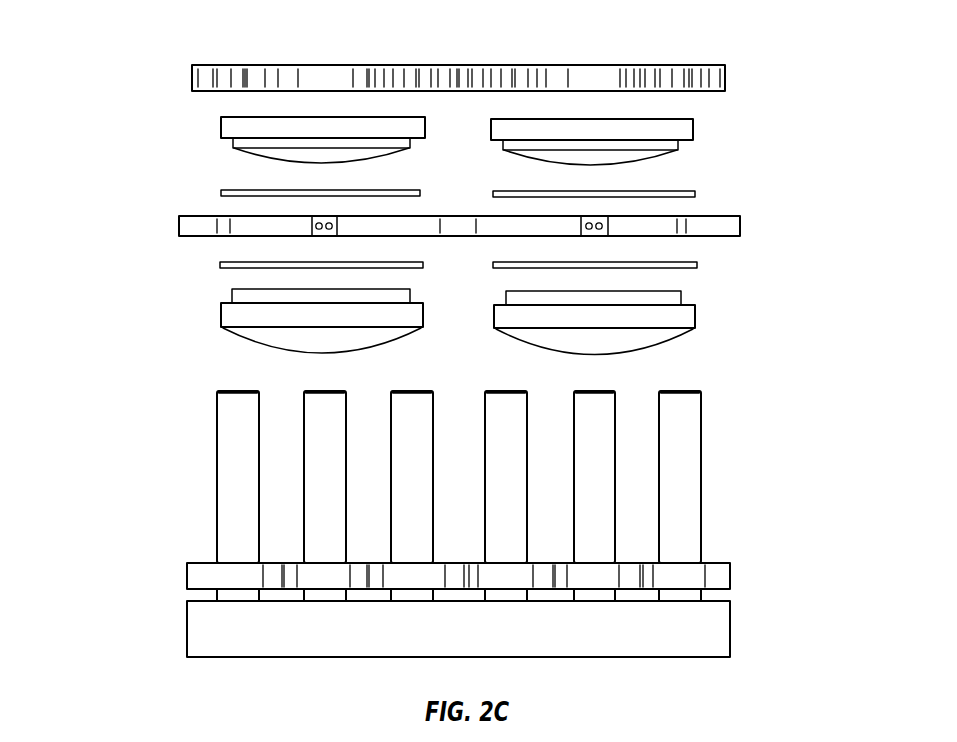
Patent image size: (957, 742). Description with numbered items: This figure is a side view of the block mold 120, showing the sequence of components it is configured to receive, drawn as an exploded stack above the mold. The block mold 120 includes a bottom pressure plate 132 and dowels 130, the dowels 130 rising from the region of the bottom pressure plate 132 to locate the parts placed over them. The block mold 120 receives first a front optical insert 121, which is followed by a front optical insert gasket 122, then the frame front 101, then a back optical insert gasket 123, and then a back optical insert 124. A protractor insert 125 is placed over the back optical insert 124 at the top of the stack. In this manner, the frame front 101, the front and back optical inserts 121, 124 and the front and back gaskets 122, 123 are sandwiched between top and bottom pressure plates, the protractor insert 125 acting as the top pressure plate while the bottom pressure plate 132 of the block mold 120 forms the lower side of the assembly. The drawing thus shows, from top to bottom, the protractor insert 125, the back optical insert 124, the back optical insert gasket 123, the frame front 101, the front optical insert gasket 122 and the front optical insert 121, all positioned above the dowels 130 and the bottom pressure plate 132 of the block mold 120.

The frame front 101 is at (179, 222).
The block mold 120 is at (187, 618).
The front optical insert 121 is at (221, 319).
The front optical insert gasket 122 is at (220, 264).
The back optical insert gasket 123 is at (221, 193).
The back optical insert 124 is at (221, 131).
The protractor insert 125 is at (195, 65).
The dowels 130 is at (391, 465).
The bottom pressure plate 132 is at (187, 574).